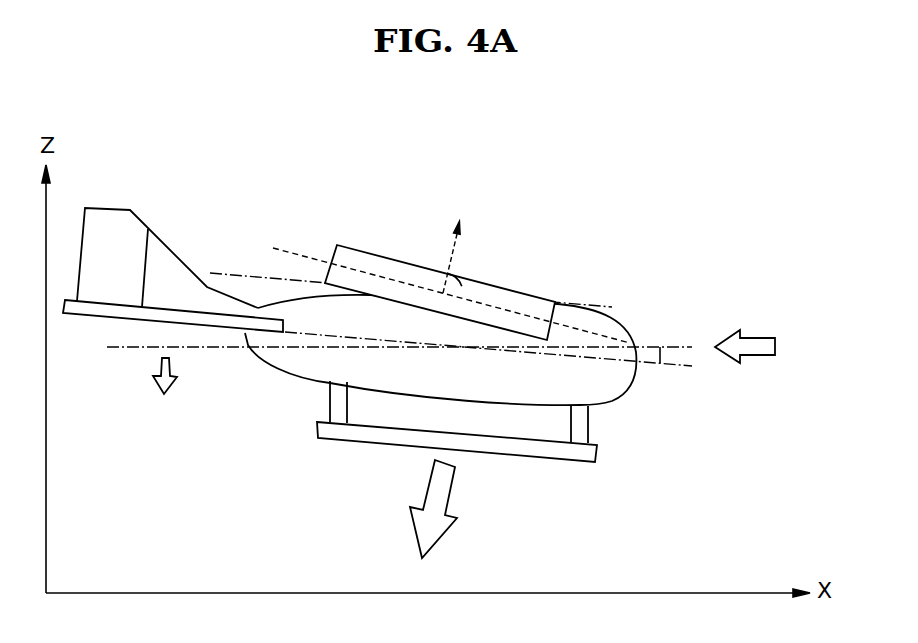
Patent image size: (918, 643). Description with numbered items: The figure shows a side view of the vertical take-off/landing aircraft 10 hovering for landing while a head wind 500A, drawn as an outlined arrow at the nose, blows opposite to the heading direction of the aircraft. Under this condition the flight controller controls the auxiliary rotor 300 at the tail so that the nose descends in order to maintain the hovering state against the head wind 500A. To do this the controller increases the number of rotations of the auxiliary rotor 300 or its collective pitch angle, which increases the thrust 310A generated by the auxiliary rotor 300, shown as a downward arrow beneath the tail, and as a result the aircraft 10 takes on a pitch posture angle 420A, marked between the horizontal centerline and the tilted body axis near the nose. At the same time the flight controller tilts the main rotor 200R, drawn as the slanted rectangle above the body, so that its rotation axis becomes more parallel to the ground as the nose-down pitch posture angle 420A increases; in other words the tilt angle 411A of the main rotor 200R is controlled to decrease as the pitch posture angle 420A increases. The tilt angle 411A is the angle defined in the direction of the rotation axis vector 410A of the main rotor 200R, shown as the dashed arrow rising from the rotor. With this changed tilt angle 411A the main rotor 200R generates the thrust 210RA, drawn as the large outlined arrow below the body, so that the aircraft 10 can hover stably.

The vertical take-off/landing aircraft 10 is at (730, 178).
The auxiliary rotor 300 is at (173, 317).
The main rotor 200R is at (403, 260).
The rotation axis vector 410A is at (457, 248).
The tilt angle 411A is at (458, 280).
The pitch posture angle 420A is at (660, 363).
The head wind 500A is at (755, 340).
The thrust 310A is at (157, 368).
The thrust 210RA is at (448, 485).